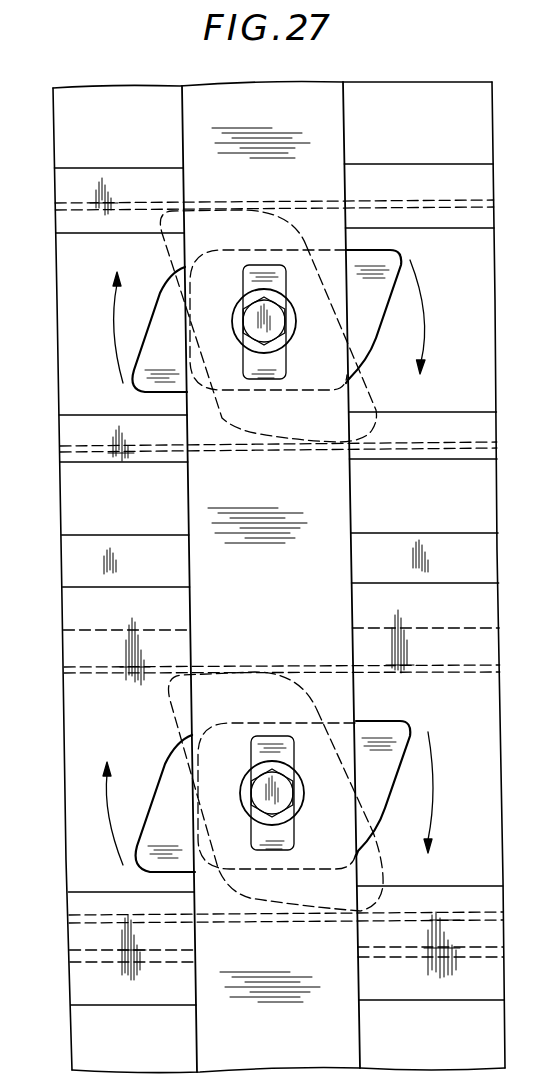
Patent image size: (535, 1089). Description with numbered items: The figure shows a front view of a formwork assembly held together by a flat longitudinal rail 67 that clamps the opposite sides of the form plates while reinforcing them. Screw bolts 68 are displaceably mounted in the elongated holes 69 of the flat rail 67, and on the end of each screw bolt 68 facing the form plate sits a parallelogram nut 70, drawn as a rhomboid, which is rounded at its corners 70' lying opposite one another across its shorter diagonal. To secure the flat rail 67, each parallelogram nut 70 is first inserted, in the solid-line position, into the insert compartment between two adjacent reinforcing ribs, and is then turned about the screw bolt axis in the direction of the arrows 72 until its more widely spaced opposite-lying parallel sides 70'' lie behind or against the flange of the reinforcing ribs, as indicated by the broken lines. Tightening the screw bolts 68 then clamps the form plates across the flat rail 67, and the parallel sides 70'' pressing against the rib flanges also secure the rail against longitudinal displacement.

The longitudinal rail 67 is at (352, 491).
The screw bolt 68 is at (288, 800).
The elongated hole 69 is at (253, 757).
The parallelogram nut 70 is at (330, 786).
The rounded corners 70' is at (270, 791).
The more widely spaced opposite-lying parallel sides 70'' is at (273, 796).
The arrows 72 is at (108, 811).